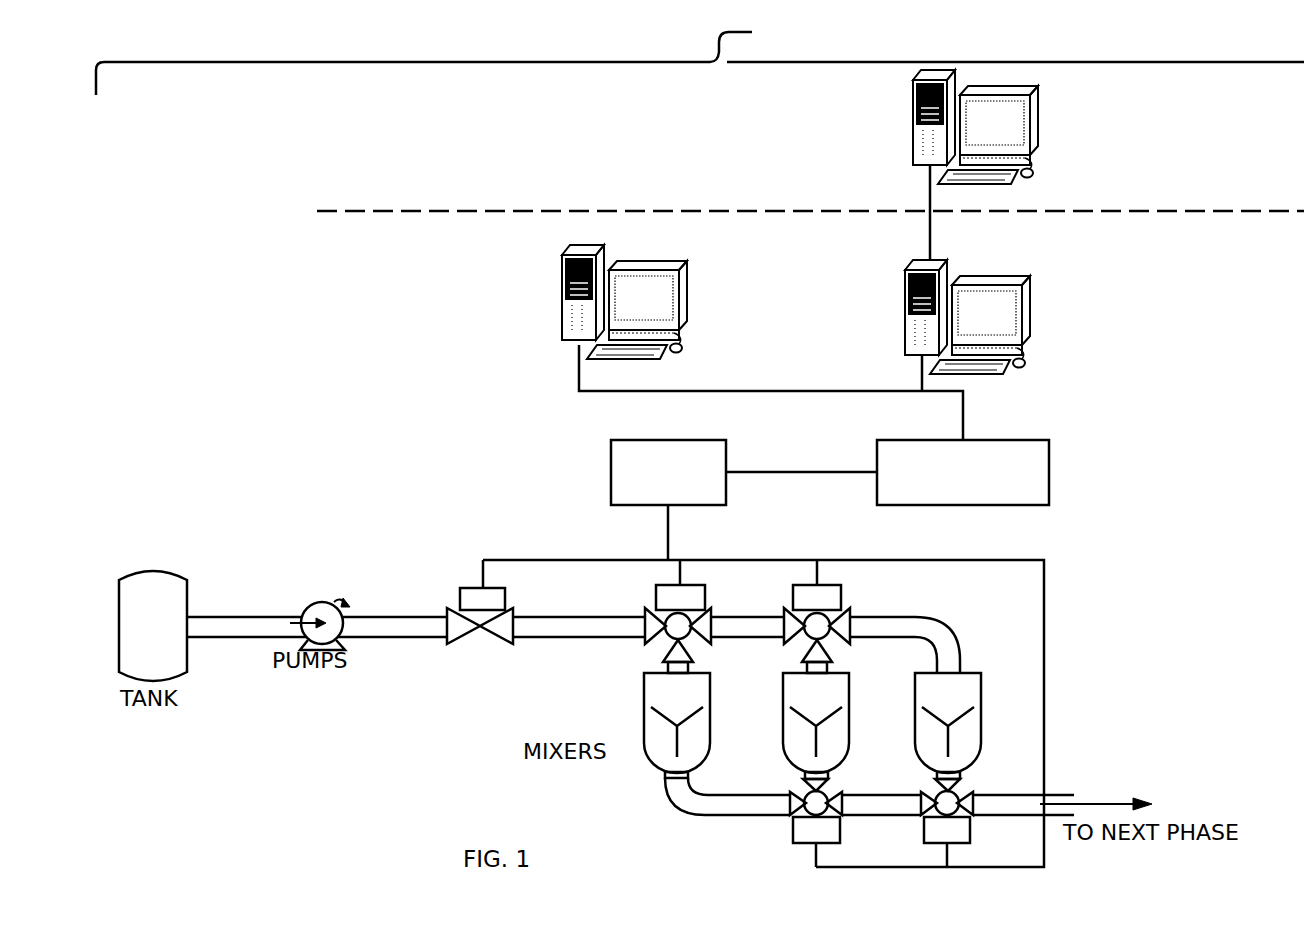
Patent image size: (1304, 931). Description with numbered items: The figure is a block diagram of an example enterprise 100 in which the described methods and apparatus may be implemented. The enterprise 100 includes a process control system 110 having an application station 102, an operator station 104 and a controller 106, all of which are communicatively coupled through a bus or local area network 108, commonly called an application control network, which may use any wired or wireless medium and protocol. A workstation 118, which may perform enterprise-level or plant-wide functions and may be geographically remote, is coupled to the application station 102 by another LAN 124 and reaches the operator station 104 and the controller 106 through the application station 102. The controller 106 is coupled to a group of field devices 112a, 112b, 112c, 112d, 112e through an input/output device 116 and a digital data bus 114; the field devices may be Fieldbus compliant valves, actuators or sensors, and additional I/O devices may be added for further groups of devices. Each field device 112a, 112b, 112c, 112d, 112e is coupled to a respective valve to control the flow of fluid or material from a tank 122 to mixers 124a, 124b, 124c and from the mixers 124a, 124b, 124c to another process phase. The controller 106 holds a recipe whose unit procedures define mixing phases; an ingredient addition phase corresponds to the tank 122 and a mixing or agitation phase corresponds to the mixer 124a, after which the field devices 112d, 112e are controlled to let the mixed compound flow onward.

The enterprise 100 is at (700, 58).
The application station 102 is at (905, 312).
The operator station 104 is at (600, 250).
The controller 106 is at (1070, 445).
The bus or local area network (LAN) 108 is at (740, 391).
The process control system 110 is at (370, 375).
The field device 112a is at (458, 600).
The field device 112b is at (656, 593).
The field device 112c is at (838, 592).
The field device 112d is at (802, 845).
The field device 112e is at (932, 845).
The digital data bus 114 is at (668, 531).
The input/output (I/O) device 116 is at (726, 455).
The workstation 118 is at (913, 131).
The tank 122 is at (153, 626).
The LAN 124 is at (930, 182).
The mixer 124a is at (710, 723).
The mixer 124b is at (850, 723).
The mixer 124c is at (982, 723).